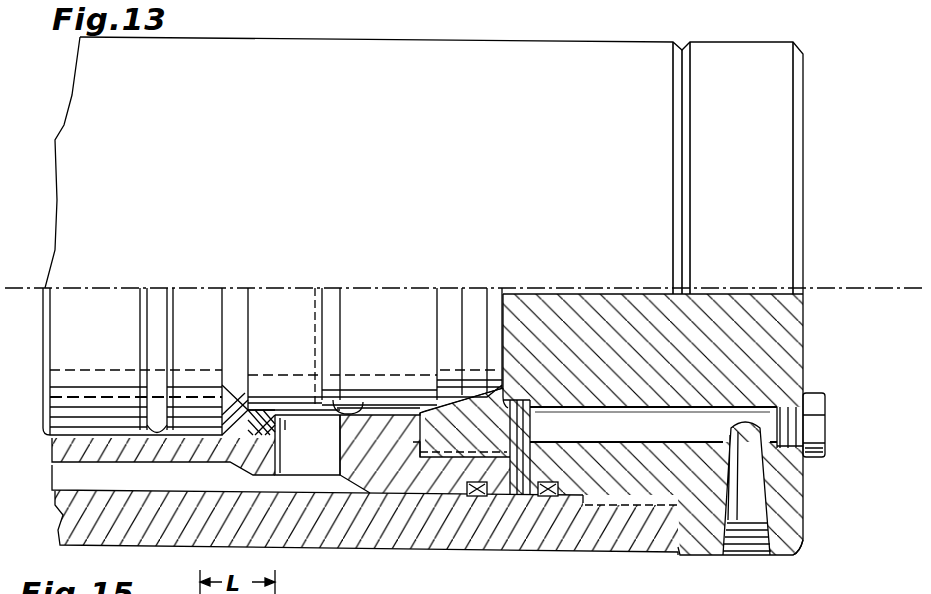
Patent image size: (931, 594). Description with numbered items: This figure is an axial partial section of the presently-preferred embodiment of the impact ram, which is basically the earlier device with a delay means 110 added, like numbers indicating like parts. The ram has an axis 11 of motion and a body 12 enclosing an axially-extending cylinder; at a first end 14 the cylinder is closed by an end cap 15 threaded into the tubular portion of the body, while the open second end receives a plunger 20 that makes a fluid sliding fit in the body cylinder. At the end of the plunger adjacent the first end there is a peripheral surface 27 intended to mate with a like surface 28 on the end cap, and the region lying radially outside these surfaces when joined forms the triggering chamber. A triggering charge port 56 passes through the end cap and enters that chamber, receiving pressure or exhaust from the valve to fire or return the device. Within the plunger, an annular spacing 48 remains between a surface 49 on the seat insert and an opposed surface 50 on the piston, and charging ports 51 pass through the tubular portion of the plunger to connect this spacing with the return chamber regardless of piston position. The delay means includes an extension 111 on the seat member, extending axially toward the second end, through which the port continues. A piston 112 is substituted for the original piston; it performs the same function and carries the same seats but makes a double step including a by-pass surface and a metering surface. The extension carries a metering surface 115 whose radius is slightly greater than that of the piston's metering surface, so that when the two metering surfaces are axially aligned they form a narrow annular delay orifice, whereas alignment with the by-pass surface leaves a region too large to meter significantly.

The axis of motion 11 is at (803, 292).
The body 12 is at (487, 553).
The first end 14 is at (262, 33).
The end cap 15 is at (800, 552).
The plunger 20 is at (52, 464).
The peripheral surface 27 is at (505, 400).
The mating surface on end cap 28 is at (522, 425).
The annular spacing 48 is at (383, 410).
The surface on seat insert 49 is at (432, 405).
The opposed surface on piston 50 is at (345, 405).
The charging ports 51 is at (307, 445).
The triggering charge port 56 is at (747, 488).
The delay means 110 is at (250, 402).
The extension 111 is at (240, 463).
The piston 112 is at (92, 300).
The metering surface 115 is at (272, 415).